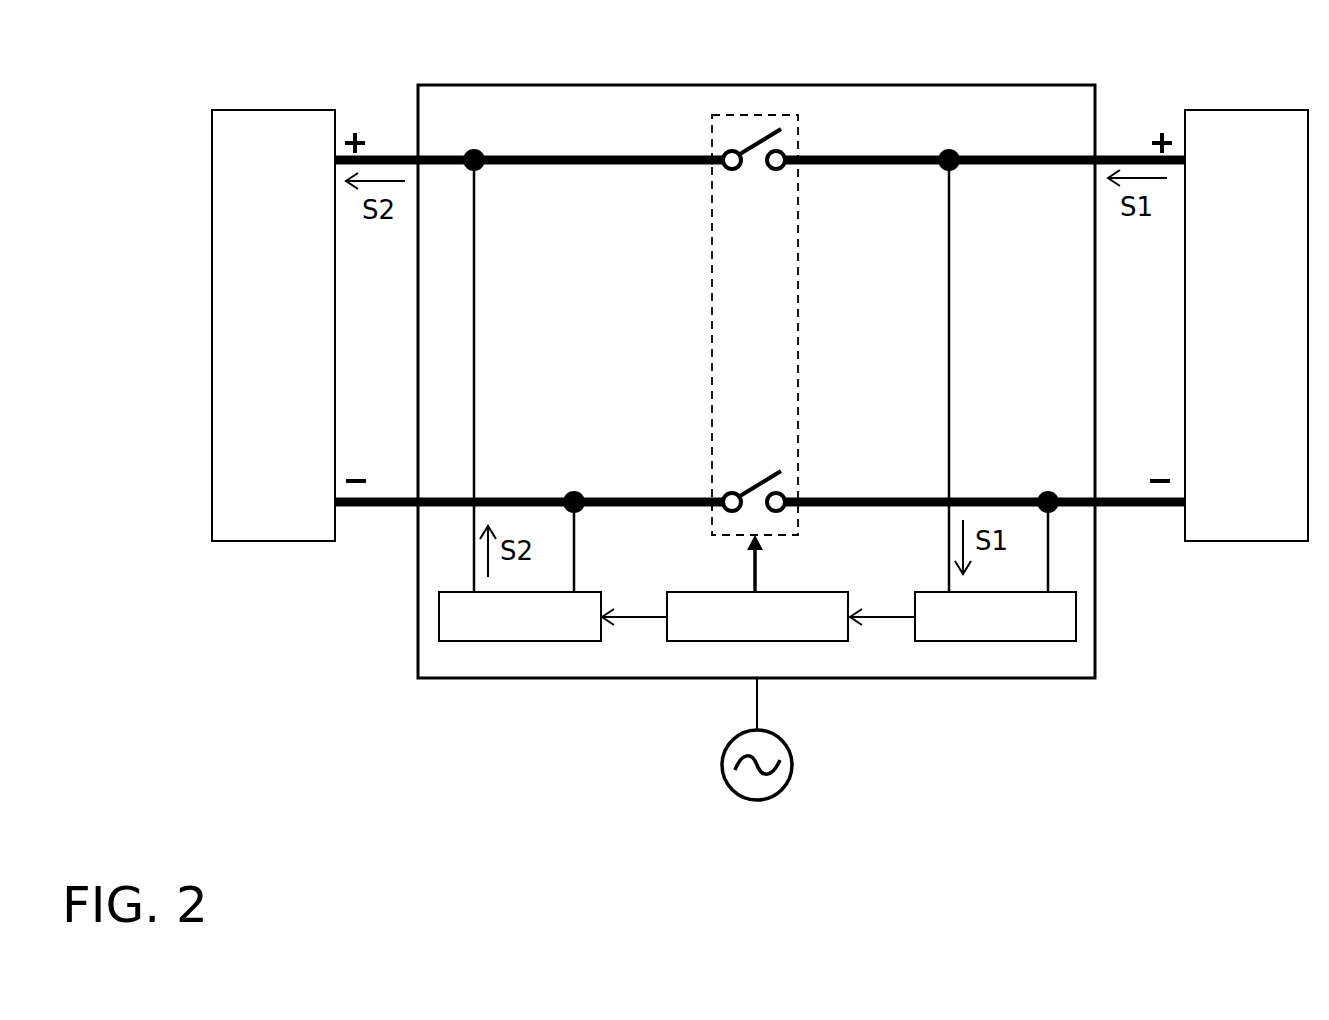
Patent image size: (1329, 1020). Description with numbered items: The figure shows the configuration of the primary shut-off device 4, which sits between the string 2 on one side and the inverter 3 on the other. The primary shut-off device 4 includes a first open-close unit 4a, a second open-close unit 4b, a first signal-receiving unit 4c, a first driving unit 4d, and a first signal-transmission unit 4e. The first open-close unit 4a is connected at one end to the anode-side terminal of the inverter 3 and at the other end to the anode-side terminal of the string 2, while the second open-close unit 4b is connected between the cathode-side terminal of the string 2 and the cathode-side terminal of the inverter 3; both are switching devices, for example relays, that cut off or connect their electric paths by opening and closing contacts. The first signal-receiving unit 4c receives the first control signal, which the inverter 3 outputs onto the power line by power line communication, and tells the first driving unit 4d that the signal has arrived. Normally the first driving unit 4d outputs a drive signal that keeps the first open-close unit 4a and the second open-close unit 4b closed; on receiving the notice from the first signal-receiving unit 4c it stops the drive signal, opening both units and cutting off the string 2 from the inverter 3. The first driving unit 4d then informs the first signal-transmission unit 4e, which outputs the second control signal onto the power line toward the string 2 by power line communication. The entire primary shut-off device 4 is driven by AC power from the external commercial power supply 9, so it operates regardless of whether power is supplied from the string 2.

The string 2 is at (272, 543).
The inverter 3 is at (1237, 543).
The primary shut-off device 4 is at (1030, 85).
The first open-close unit 4a is at (805, 133).
The second open-close unit 4b is at (790, 458).
The first signal-receiving unit 4c is at (1000, 641).
The first driving unit 4d is at (808, 641).
The first signal-transmission unit 4e is at (527, 641).
The commercial power supply 9 is at (757, 800).